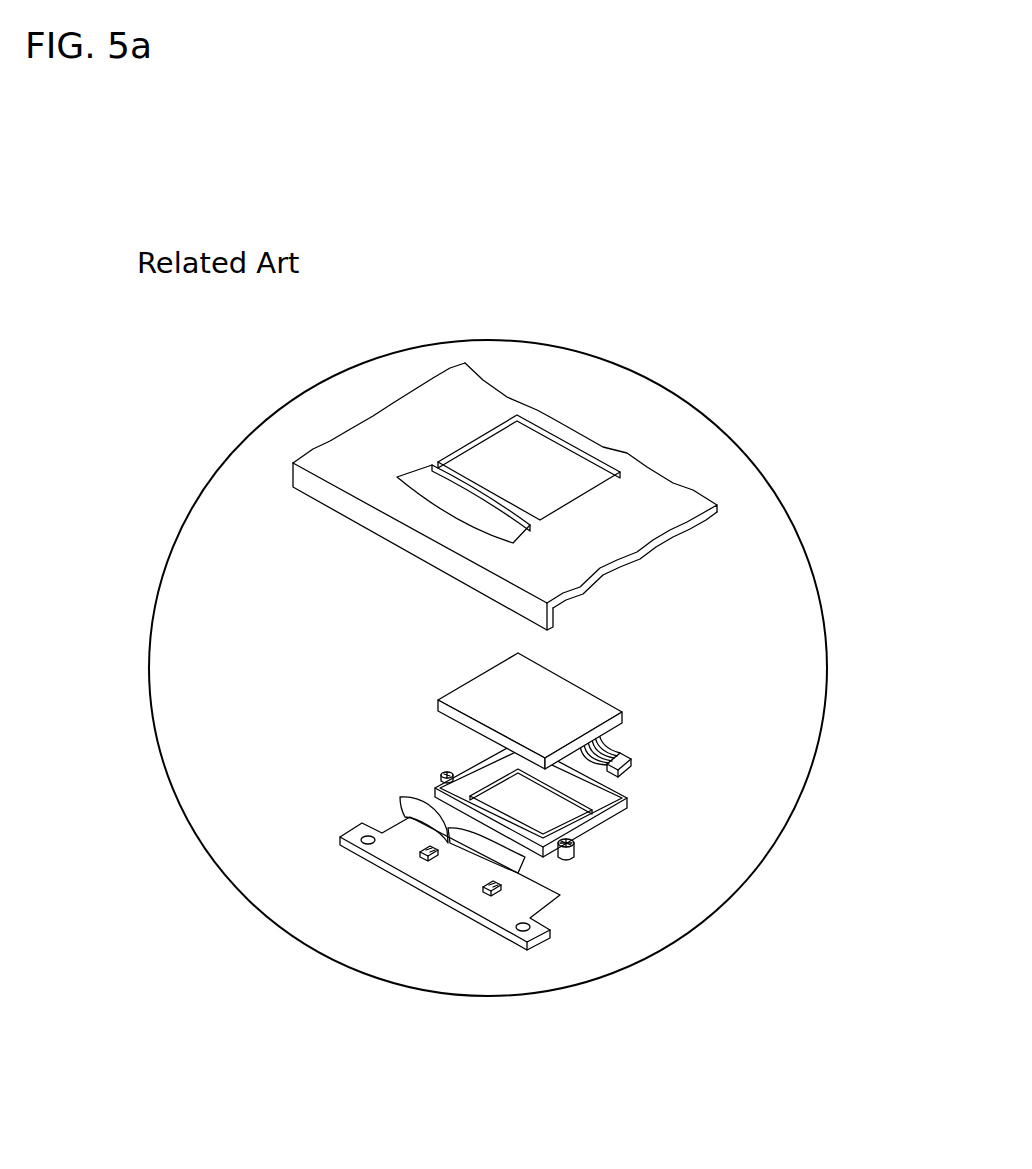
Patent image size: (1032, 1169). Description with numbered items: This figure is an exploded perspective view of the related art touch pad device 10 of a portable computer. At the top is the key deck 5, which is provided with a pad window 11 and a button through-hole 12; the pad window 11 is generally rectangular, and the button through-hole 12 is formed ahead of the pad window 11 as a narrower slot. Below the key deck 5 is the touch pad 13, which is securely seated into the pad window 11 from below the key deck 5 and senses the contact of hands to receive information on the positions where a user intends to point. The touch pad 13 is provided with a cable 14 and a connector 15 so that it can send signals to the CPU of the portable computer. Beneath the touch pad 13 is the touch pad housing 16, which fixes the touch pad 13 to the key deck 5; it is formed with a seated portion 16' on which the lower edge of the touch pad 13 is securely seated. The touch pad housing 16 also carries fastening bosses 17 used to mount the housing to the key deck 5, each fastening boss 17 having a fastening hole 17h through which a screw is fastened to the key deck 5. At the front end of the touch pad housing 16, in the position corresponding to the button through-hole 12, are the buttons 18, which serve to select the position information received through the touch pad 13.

The touch pad device 10 is at (818, 513).
The key deck 5 is at (340, 467).
The pad window 11 is at (560, 492).
The button through-hole 12 is at (452, 502).
The touch pad 13 is at (563, 692).
The cable 14 is at (612, 744).
The connector 15 is at (632, 762).
The touch pad housing 16 is at (567, 800).
The seated portion 16' is at (612, 801).
The fastening boss 17 is at (440, 772).
The fastening hole 17h is at (575, 845).
The buttons 18 is at (413, 803).